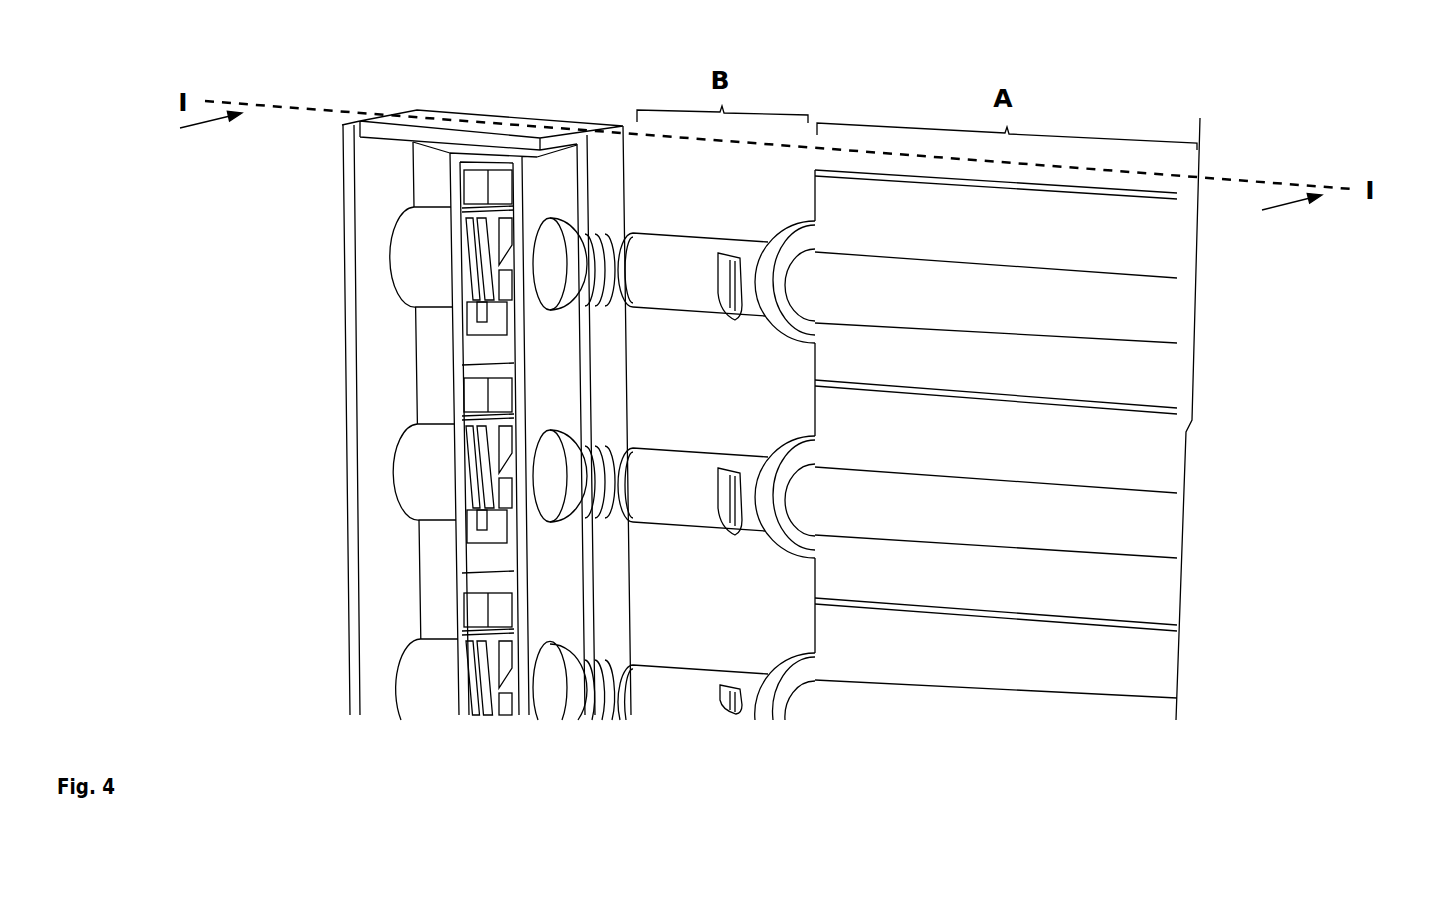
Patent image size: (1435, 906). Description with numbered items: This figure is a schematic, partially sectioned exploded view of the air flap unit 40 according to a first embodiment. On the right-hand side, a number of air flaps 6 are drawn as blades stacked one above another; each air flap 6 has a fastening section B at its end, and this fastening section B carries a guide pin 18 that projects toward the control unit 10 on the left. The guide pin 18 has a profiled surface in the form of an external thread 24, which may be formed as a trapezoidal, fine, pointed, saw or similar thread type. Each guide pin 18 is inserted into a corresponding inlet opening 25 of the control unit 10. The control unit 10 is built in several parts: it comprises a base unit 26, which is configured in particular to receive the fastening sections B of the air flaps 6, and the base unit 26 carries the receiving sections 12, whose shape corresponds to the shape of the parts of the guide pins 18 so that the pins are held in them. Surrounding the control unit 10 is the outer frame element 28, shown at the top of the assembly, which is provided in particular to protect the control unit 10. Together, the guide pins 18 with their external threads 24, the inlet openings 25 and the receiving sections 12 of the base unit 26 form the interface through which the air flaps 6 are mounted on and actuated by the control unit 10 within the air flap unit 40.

The air flap 6 is at (1216, 195).
The control unit 10 is at (535, 90).
The receiving section 12 is at (300, 120).
The guide pin 18 is at (682, 248).
The external thread 24 is at (729, 294).
The inlet opening 25 is at (547, 262).
The base unit 26 is at (400, 724).
The outer frame element 28 is at (415, 118).
The air flap unit 40 is at (1308, 720).